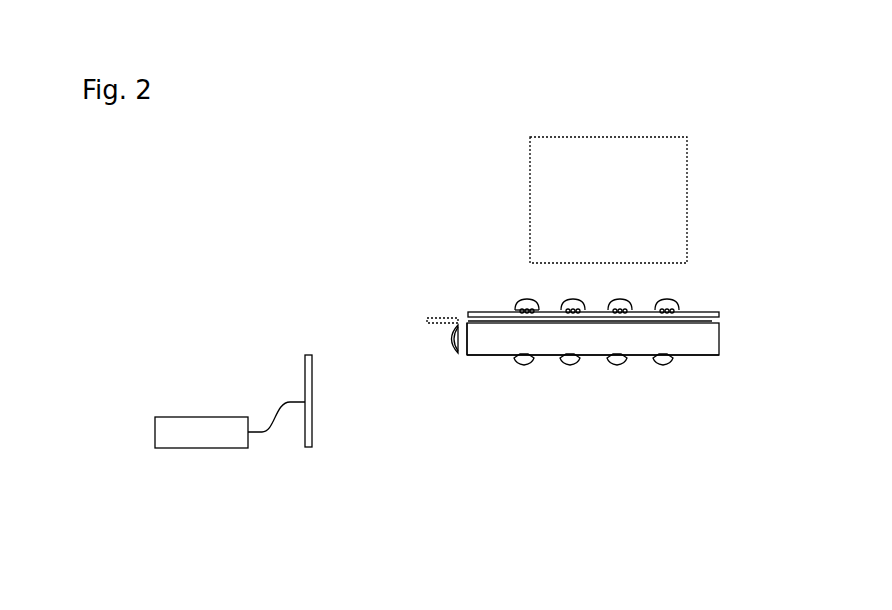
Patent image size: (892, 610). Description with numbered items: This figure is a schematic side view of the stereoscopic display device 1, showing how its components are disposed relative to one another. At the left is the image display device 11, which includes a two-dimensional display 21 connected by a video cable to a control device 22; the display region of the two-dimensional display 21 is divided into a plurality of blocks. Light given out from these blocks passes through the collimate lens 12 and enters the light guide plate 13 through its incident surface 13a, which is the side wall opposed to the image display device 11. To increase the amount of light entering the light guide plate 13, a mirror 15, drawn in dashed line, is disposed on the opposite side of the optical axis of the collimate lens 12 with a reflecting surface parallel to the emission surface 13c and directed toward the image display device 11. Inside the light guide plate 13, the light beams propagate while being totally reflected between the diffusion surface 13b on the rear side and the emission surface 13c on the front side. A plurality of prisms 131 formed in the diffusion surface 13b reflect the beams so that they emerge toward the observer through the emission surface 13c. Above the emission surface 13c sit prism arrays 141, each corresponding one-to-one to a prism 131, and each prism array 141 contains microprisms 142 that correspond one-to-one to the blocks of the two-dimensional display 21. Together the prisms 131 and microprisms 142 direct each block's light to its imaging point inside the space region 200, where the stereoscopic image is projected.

The stereoscopic display device 1 is at (682, 472).
The image display device 11 is at (236, 445).
The collimate lens 12 is at (450, 355).
The light guide plate 13 is at (721, 352).
The incident surface 13a is at (467, 356).
The diffusion surface 13b is at (690, 357).
The emission surface 13c is at (712, 322).
The mirror 15 is at (428, 318).
The two-dimensional display 21 is at (305, 428).
The control device 22 is at (210, 448).
The prisms 131 is at (663, 366).
The prism arrays 141 is at (573, 298).
The microprisms 142 is at (518, 309).
The space region 200 is at (688, 200).